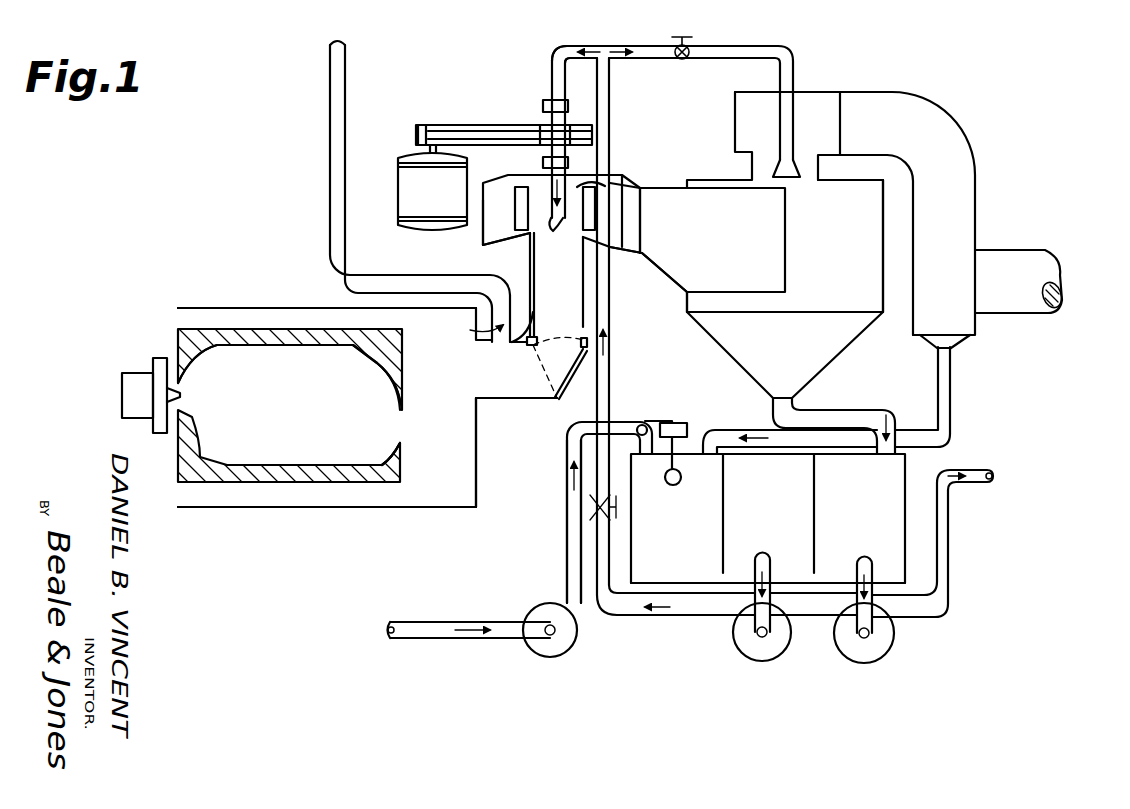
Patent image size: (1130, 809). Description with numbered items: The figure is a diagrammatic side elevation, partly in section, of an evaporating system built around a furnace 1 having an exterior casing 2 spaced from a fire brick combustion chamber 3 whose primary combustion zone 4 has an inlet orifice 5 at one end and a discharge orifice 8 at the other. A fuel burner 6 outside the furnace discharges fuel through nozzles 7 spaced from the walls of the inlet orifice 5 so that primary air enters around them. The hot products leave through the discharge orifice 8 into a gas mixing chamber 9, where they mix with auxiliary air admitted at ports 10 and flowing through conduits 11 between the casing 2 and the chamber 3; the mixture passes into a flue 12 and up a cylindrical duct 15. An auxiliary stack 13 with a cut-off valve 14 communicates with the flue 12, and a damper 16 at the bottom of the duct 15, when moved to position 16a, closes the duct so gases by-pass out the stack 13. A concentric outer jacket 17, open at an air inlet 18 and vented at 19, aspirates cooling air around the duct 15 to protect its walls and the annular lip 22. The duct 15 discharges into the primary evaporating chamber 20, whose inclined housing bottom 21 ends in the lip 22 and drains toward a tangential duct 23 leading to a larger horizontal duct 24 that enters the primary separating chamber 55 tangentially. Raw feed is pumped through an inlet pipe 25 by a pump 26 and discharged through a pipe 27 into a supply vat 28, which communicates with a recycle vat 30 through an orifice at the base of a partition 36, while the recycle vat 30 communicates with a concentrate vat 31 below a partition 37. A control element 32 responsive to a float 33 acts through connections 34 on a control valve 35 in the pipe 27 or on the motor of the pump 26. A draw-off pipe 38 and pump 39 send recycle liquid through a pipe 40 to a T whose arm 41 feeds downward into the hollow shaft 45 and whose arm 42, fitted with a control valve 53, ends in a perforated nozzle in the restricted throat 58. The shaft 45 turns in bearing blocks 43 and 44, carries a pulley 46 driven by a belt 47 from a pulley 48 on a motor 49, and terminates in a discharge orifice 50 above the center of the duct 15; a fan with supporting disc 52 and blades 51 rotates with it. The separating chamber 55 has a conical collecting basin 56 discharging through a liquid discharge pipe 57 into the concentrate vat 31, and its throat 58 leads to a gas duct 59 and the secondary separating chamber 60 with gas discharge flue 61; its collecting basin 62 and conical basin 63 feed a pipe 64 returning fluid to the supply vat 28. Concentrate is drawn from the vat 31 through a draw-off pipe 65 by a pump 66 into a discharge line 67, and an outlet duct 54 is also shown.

The furnace 1 is at (465, 477).
The exterior casing 2 is at (210, 308).
The combustion chamber 3 is at (262, 485).
The primary combustion zone 4 is at (285, 448).
The inlet orifice 5 is at (180, 386).
The fuel burner 6 is at (133, 378).
The nozzles 7 is at (180, 395).
The discharge orifice 8 is at (400, 430).
The gas mixing chamber 9 is at (451, 452).
The ports 10 is at (185, 500).
The conduits 11 is at (340, 497).
The flue 12 is at (505, 398).
The auxiliary stack 13 is at (420, 257).
The cut-off valve 14 is at (474, 328).
The cylindrical duct 15 is at (565, 320).
The damper 16 is at (560, 380).
The damper closed position 16a is at (531, 350).
The outer jacket 17 is at (530, 268).
The air inlet 18 is at (520, 342).
The vent 19 is at (533, 235).
The primary evaporating chamber 20 is at (500, 185).
The housing bottom 21 is at (487, 247).
The annular lip 22 is at (540, 236).
The duct 23 is at (633, 255).
The duct 24 is at (660, 188).
The inlet pipe 25 is at (428, 630).
The pump 26 is at (543, 650).
The pipe 27 is at (620, 422).
The supply vat 28 is at (678, 562).
The recycle vat 30 is at (798, 572).
The concentrate vat 31 is at (893, 405).
The control element 32 is at (680, 428).
The float 33 is at (673, 485).
The connections 34 is at (665, 421).
The control valve 35 is at (638, 435).
The partition 36 is at (723, 512).
The partition 37 is at (814, 512).
The draw-off pipe 38 is at (770, 593).
The pump 39 is at (750, 645).
The pipe 40 is at (702, 610).
The arm 41 is at (580, 47).
The arm 42 is at (628, 47).
The bearing block 43 is at (548, 100).
The bearing housing 44 is at (568, 162).
The shaft 45 is at (545, 107).
The pulley 46 is at (545, 125).
The belt 47 is at (460, 125).
The pulley 48 is at (420, 128).
The motor 49 is at (408, 200).
The discharge orifice 50 is at (553, 222).
The fan blades 51 is at (595, 222).
The supporting disc 52 is at (585, 184).
The control valve 53 is at (690, 50).
The outlet duct 54 is at (797, 168).
The primary separating chamber 55 is at (873, 296).
The conical collecting basin 56 is at (832, 362).
The liquid discharge pipe 57 is at (860, 412).
The restricted throat 58 is at (753, 162).
The gas duct 59 is at (850, 92).
The secondary separating chamber 60 is at (965, 172).
The gas discharge flue 61 is at (1030, 268).
The collecting basin 62 is at (972, 330).
The conical basin 63 is at (955, 345).
The pipe 64 is at (950, 420).
The draw-off pipe 65 is at (872, 592).
The pump 66 is at (878, 645).
The discharge line 67 is at (975, 480).